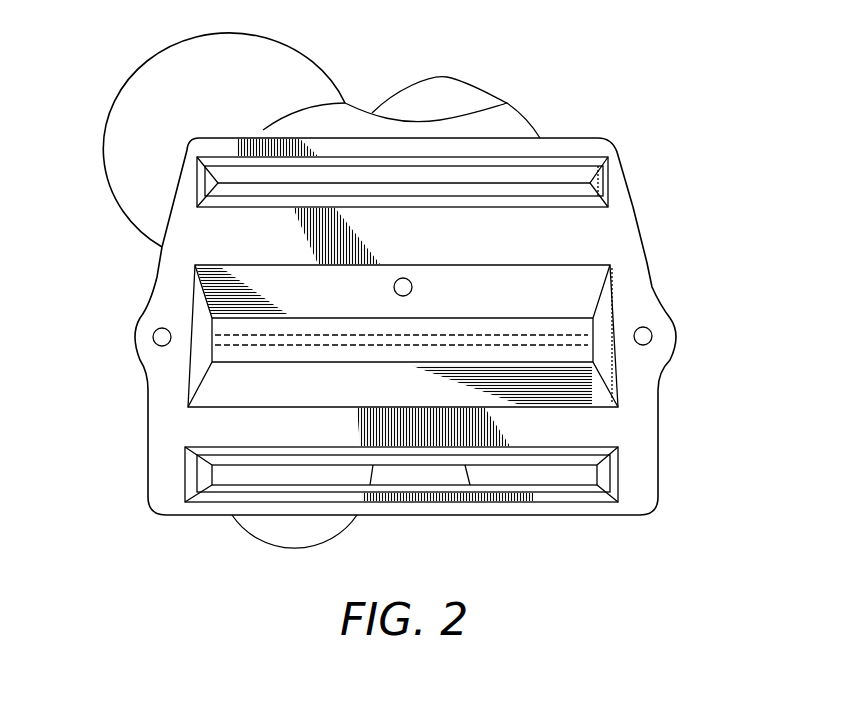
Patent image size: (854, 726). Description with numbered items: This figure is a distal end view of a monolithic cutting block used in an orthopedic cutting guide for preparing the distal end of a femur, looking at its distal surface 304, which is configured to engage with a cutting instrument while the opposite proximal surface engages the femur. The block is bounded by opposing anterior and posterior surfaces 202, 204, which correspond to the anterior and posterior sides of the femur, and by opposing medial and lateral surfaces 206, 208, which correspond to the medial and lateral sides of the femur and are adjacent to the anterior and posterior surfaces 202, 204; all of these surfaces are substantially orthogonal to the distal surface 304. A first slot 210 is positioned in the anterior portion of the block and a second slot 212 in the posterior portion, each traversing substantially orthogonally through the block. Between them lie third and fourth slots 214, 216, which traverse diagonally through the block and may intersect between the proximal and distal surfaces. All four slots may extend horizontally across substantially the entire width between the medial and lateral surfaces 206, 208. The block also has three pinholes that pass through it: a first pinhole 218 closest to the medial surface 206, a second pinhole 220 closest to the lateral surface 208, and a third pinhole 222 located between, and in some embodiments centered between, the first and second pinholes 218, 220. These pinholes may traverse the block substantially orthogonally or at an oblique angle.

The anterior surface 202 is at (574, 138).
The posterior surface 204 is at (600, 515).
The medial surface 206 is at (155, 272).
The lateral surface 208 is at (642, 215).
The first slot 210 is at (588, 190).
The second slot 212 is at (587, 475).
The third slot 214 is at (565, 353).
The fourth slot 216 is at (565, 325).
The first pinhole 218 is at (154, 336).
The second pinhole 220 is at (652, 336).
The third pinhole 222 is at (397, 292).
The distal surface 304 is at (422, 247).